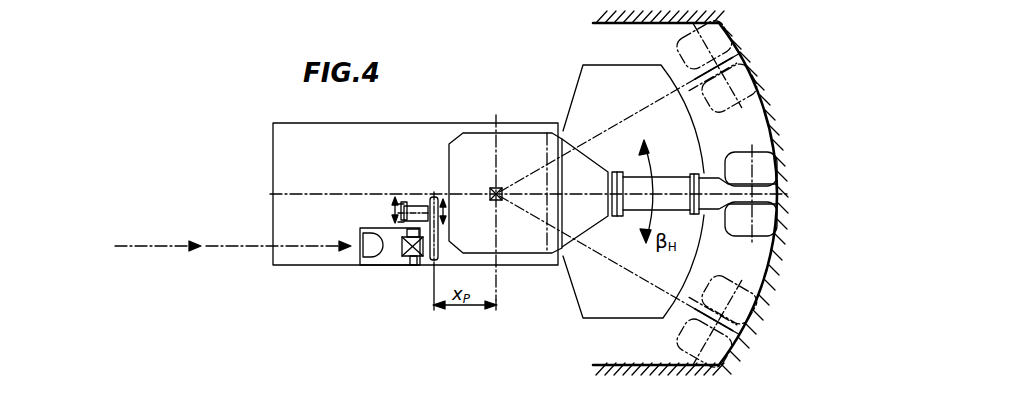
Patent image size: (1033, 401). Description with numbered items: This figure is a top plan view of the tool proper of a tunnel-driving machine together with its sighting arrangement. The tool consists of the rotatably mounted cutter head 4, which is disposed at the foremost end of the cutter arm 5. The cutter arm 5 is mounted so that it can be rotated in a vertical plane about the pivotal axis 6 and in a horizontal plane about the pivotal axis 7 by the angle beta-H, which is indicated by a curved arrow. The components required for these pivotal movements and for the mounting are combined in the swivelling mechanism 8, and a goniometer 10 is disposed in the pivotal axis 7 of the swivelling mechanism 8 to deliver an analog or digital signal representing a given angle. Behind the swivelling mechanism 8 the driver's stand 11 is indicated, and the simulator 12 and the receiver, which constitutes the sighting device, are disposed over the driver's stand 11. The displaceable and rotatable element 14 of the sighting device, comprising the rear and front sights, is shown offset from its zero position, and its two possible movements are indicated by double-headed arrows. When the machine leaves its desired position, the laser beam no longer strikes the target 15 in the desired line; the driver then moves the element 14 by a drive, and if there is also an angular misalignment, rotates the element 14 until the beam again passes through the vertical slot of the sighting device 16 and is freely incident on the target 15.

The cutter head 4 is at (742, 160).
The cutter arm 5 is at (683, 186).
The pivotal axis 6 is at (547, 161).
The pivotal axis 7 is at (493, 189).
The swivelling mechanism 8 is at (474, 228).
The goniometer 10 is at (498, 201).
The driver's stand 11 is at (384, 259).
The simulator 12 is at (413, 265).
The displaceable and rotatable element of the sighting device 14 is at (418, 206).
The target 15 is at (431, 197).
The sighting device 16 is at (403, 204).